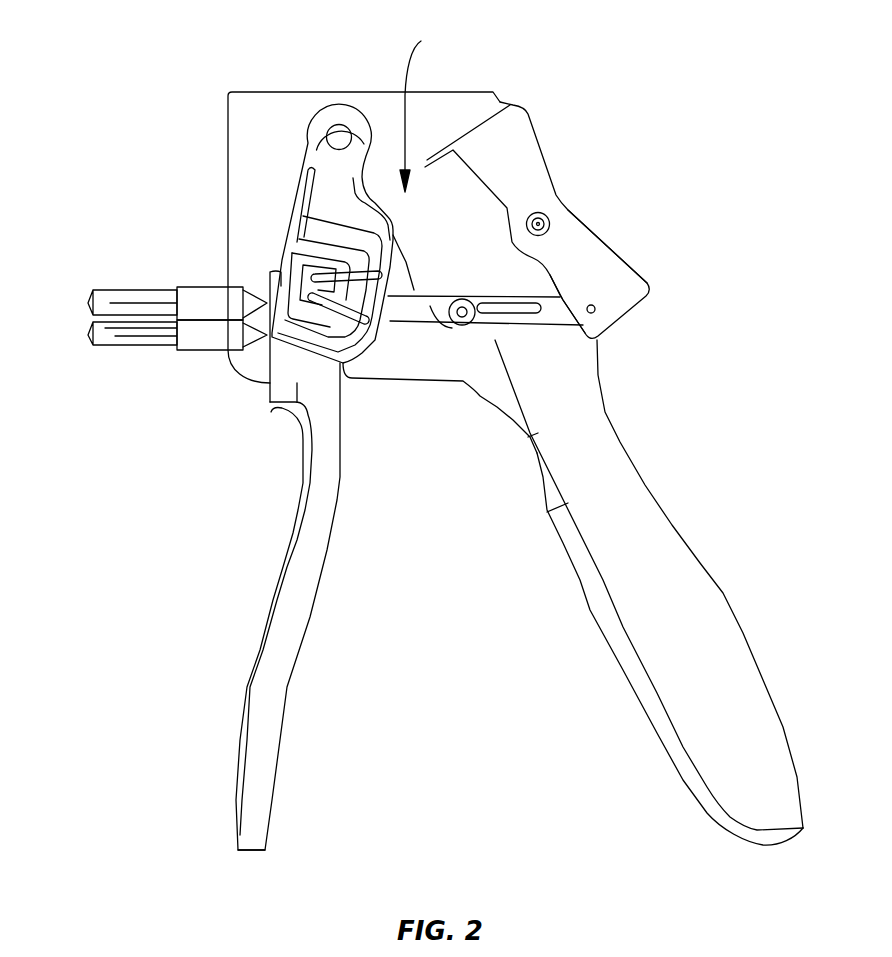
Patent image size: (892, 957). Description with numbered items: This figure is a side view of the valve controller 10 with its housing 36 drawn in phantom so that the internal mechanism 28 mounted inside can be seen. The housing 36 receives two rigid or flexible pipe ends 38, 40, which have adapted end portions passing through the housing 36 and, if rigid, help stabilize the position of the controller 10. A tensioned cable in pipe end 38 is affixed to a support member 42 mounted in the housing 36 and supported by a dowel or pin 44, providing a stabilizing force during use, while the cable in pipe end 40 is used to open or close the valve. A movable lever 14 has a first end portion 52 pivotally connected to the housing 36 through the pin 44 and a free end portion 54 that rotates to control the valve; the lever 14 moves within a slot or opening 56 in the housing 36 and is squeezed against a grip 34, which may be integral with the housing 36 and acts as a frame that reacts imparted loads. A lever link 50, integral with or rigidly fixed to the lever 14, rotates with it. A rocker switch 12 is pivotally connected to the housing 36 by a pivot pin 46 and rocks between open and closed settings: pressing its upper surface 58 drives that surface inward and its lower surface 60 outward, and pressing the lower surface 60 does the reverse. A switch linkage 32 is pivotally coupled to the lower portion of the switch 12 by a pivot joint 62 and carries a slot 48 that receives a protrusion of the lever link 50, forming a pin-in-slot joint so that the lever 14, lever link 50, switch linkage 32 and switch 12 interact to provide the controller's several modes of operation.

The controller 10 is at (141, 30).
The switch 12 is at (574, 222).
The lever 14 is at (248, 606).
The mechanism 28 is at (433, 111).
The switch linkage 32 is at (558, 310).
The grip 34 is at (660, 530).
The housing 36 is at (252, 142).
The pipe end 38 is at (118, 290).
The pipe end 40 is at (118, 350).
The support member 42 is at (270, 287).
The dowel or pin 44 is at (337, 124).
The pivot pin 46 is at (548, 218).
The slot 48 is at (527, 374).
The lever link 50 is at (459, 326).
The first end portion 52 is at (332, 200).
The free end portion 54 is at (255, 832).
The slot or opening 56 is at (385, 381).
The upper surface 58 is at (537, 143).
The lower surface 60 is at (597, 230).
The pivot joint 62 is at (595, 311).